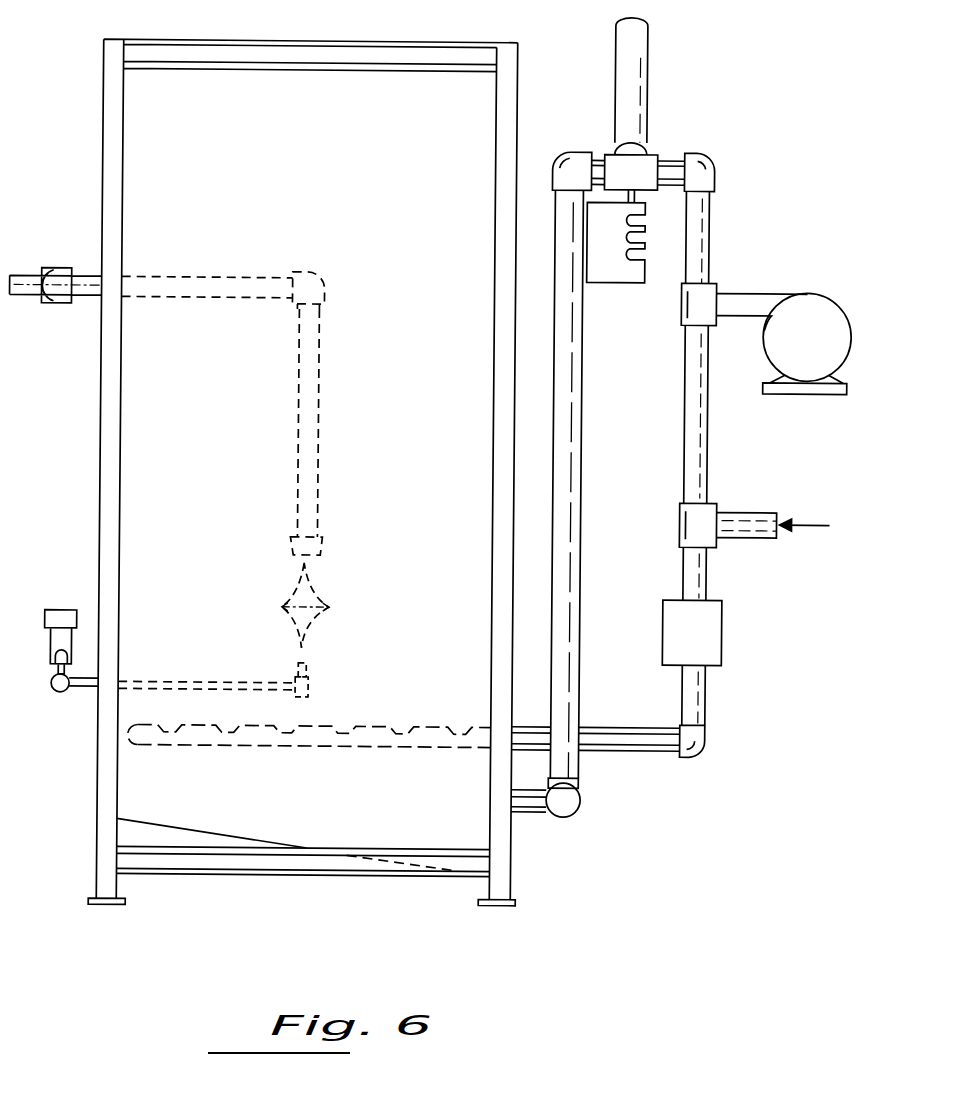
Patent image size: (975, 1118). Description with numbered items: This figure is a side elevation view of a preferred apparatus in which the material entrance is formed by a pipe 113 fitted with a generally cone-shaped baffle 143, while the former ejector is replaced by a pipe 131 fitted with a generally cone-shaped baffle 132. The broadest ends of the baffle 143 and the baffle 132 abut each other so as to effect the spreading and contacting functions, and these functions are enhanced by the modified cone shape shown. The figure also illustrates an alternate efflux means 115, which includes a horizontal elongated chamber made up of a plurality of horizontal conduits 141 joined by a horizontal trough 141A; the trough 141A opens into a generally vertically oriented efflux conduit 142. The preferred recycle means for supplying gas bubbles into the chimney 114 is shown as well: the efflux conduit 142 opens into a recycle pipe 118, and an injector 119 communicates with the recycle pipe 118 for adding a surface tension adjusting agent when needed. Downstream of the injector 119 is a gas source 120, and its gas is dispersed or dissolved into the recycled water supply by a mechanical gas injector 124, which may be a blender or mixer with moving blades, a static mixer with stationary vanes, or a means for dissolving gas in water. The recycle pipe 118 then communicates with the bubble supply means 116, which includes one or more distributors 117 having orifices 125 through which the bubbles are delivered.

The pipe 113 is at (316, 434).
The chimney 114 is at (419, 158).
The efflux means 115 is at (579, 529).
The bubble supply means 116 is at (229, 740).
The distributor 117 is at (320, 735).
The recycle pipe 118 is at (707, 560).
The injector 119 is at (815, 364).
The gas source 120 is at (747, 513).
The mechanical gas injector 124 is at (723, 623).
The orifices 125 is at (395, 722).
The pipe 131 is at (190, 680).
The generally cone-shaped baffle 132 is at (310, 625).
The horizontal conduits 141 is at (535, 812).
The horizontal trough 141A is at (568, 805).
The efflux conduit 142 is at (573, 413).
The generally cone-shaped baffle 143 is at (310, 590).